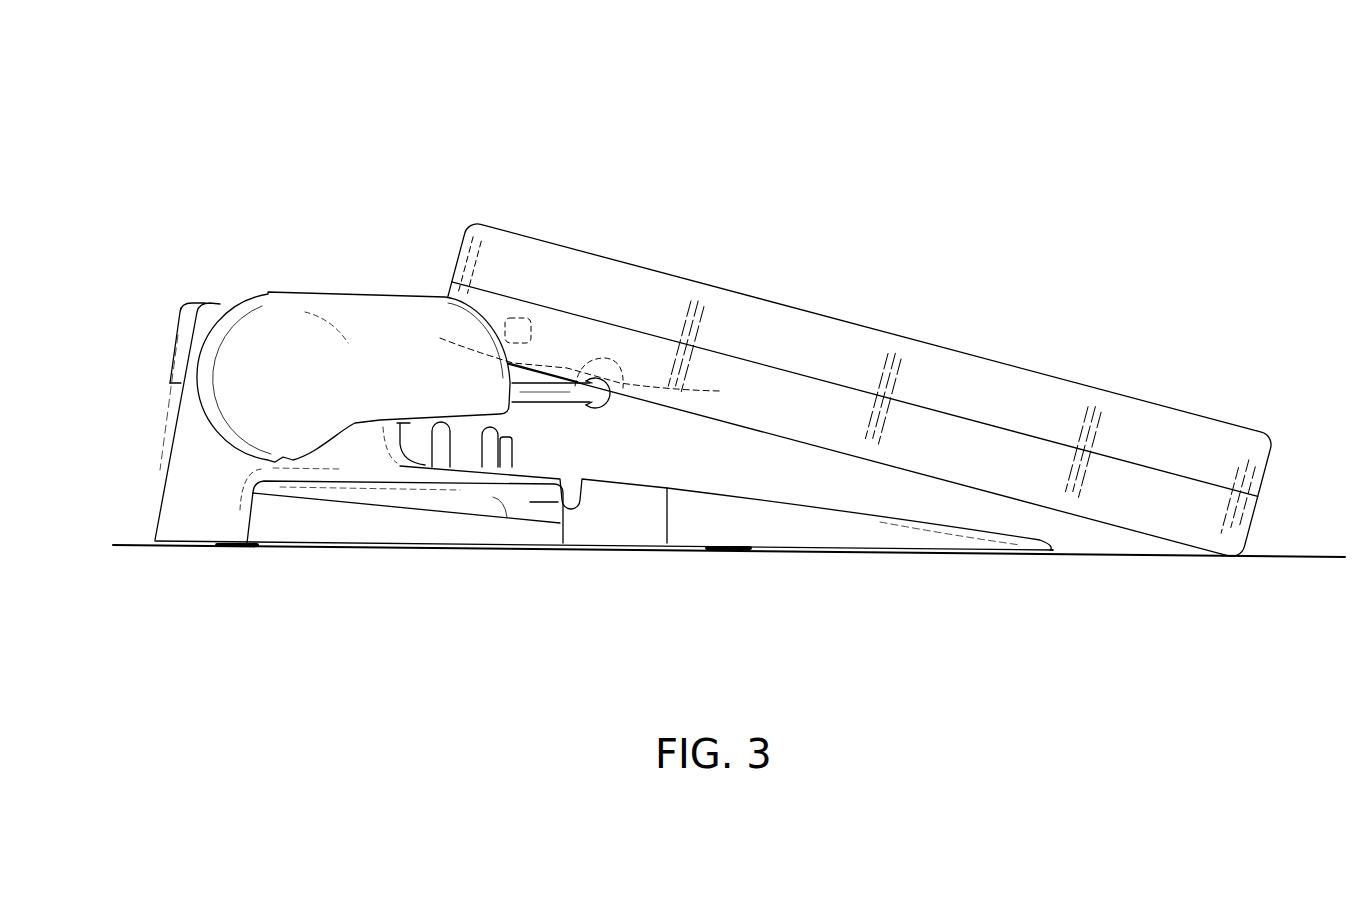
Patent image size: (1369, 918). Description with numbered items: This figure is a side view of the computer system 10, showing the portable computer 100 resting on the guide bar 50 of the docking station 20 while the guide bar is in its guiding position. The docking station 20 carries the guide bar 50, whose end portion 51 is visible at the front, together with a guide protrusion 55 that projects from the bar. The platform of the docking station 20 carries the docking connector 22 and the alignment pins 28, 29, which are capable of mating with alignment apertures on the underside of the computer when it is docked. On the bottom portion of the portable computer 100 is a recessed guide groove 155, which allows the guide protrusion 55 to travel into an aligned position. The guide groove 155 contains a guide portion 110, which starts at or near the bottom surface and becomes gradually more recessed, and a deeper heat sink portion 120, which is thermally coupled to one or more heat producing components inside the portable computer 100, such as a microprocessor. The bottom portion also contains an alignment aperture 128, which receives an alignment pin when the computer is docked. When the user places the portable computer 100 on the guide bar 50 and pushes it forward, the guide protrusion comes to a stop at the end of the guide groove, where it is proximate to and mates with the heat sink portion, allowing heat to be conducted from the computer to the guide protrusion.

The computer system 10 is at (255, 146).
The docking station 20 is at (175, 343).
The end portion 51 is at (377, 300).
The portable computer 100 is at (475, 227).
The alignment aperture 128 is at (523, 322).
The guide portion 110 is at (543, 370).
The heat sink portion 120 is at (613, 380).
The recessed guide groove 155 is at (607, 392).
The guide bar 50 is at (552, 407).
The guide protrusion 55 is at (613, 407).
The alignment pin 28 is at (497, 430).
The docking connector 22 is at (513, 460).
The alignment pin 29 is at (428, 462).